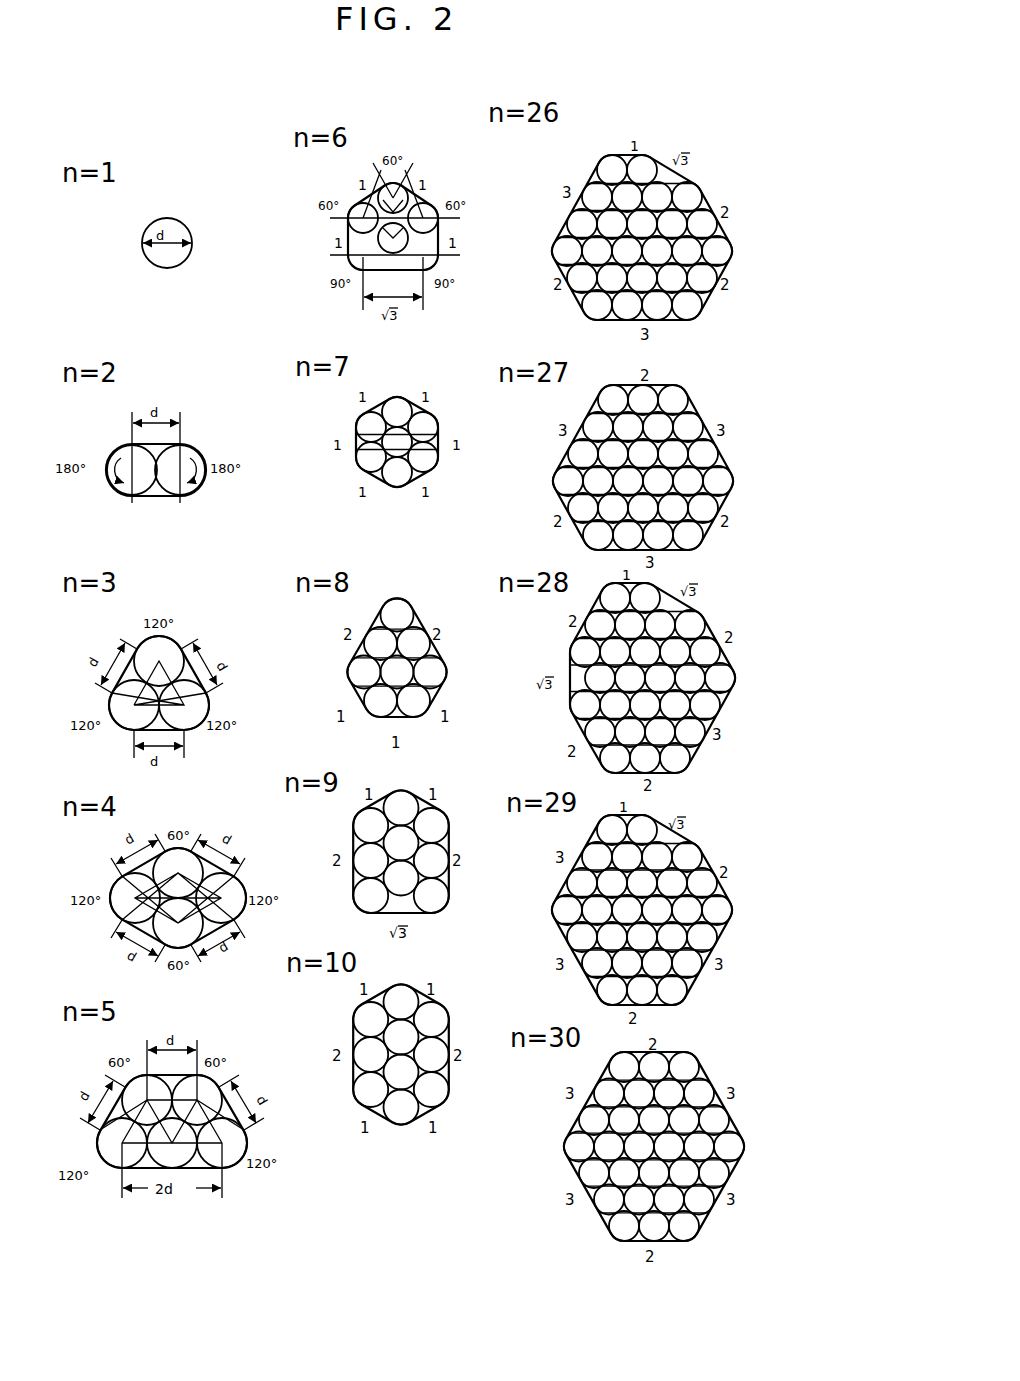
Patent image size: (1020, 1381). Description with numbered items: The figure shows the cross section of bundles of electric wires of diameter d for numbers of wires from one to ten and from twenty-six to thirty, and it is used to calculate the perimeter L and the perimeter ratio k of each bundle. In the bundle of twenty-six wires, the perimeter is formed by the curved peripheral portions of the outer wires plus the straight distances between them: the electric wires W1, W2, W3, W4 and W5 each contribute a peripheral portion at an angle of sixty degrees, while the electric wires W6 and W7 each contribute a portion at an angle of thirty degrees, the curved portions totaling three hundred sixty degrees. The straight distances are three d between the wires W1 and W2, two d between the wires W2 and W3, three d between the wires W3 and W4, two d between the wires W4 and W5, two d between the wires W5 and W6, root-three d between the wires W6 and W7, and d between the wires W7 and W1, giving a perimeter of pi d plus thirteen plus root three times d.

The electric wire W1 is at (610, 167).
The electric wire W2 is at (562, 255).
The electric wire W3 is at (594, 312).
The electric wire W4 is at (692, 312).
The electric wire W5 is at (723, 253).
The electric wire W6 is at (690, 193).
The electric wire W7 is at (644, 163).